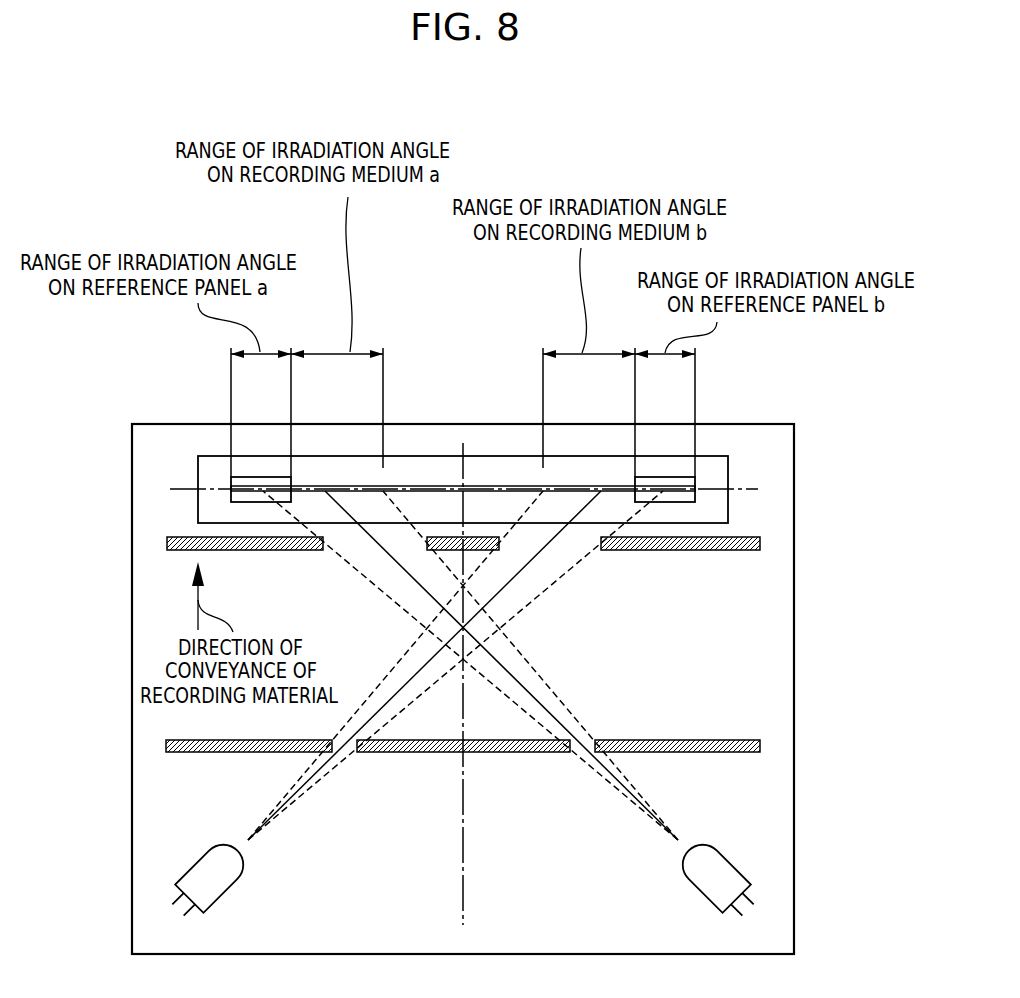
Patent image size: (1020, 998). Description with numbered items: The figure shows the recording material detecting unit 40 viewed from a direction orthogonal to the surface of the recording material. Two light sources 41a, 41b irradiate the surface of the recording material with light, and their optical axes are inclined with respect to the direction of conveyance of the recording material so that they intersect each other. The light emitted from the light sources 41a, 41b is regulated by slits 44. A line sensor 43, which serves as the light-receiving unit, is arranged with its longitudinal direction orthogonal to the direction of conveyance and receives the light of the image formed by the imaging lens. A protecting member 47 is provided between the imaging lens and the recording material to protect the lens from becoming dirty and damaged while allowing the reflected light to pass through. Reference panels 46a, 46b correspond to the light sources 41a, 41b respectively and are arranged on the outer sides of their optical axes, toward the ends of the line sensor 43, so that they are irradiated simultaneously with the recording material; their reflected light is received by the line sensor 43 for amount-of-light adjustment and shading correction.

The recording material detecting unit 40 is at (773, 630).
The light source 41a is at (703, 883).
The light source 41b is at (222, 883).
The line sensor 43 is at (437, 488).
The slits 44 is at (675, 552).
The reference panel 46a is at (236, 484).
The reference panel 46b is at (697, 483).
The protecting member 47 is at (725, 477).